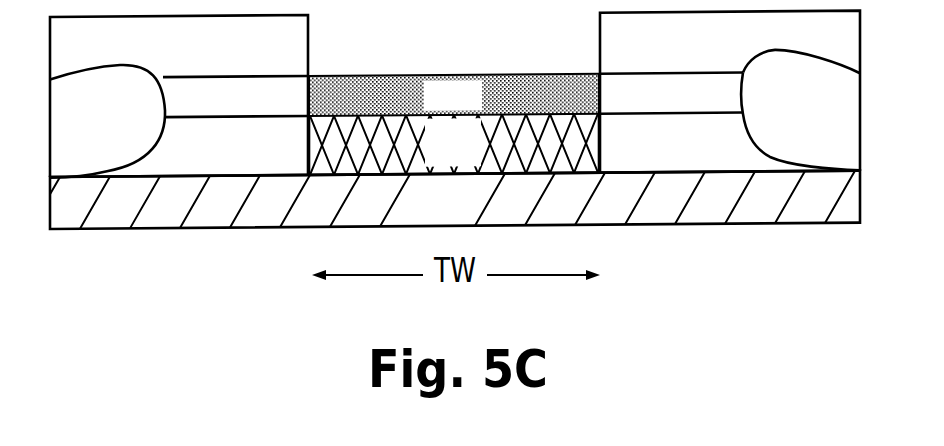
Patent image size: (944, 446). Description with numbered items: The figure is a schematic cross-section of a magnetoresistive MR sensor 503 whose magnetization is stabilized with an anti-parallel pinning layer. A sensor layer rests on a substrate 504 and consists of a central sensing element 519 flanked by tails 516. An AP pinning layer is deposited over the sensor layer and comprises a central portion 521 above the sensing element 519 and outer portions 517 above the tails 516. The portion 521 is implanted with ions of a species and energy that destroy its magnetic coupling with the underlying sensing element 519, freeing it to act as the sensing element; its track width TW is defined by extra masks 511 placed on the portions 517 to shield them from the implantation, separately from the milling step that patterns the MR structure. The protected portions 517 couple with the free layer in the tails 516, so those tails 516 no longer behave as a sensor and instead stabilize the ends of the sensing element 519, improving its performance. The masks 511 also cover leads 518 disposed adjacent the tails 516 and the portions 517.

The MR sensor 503 is at (748, 263).
The substrate 504 is at (445, 200).
The masks 511 is at (455, 94).
The tails 516 is at (455, 151).
The portions of the AP pinning layer 517 is at (453, 100).
The leads 518 is at (455, 113).
The sensing element 519 is at (454, 144).
The portion of the AP pinning layer 521 is at (454, 95).